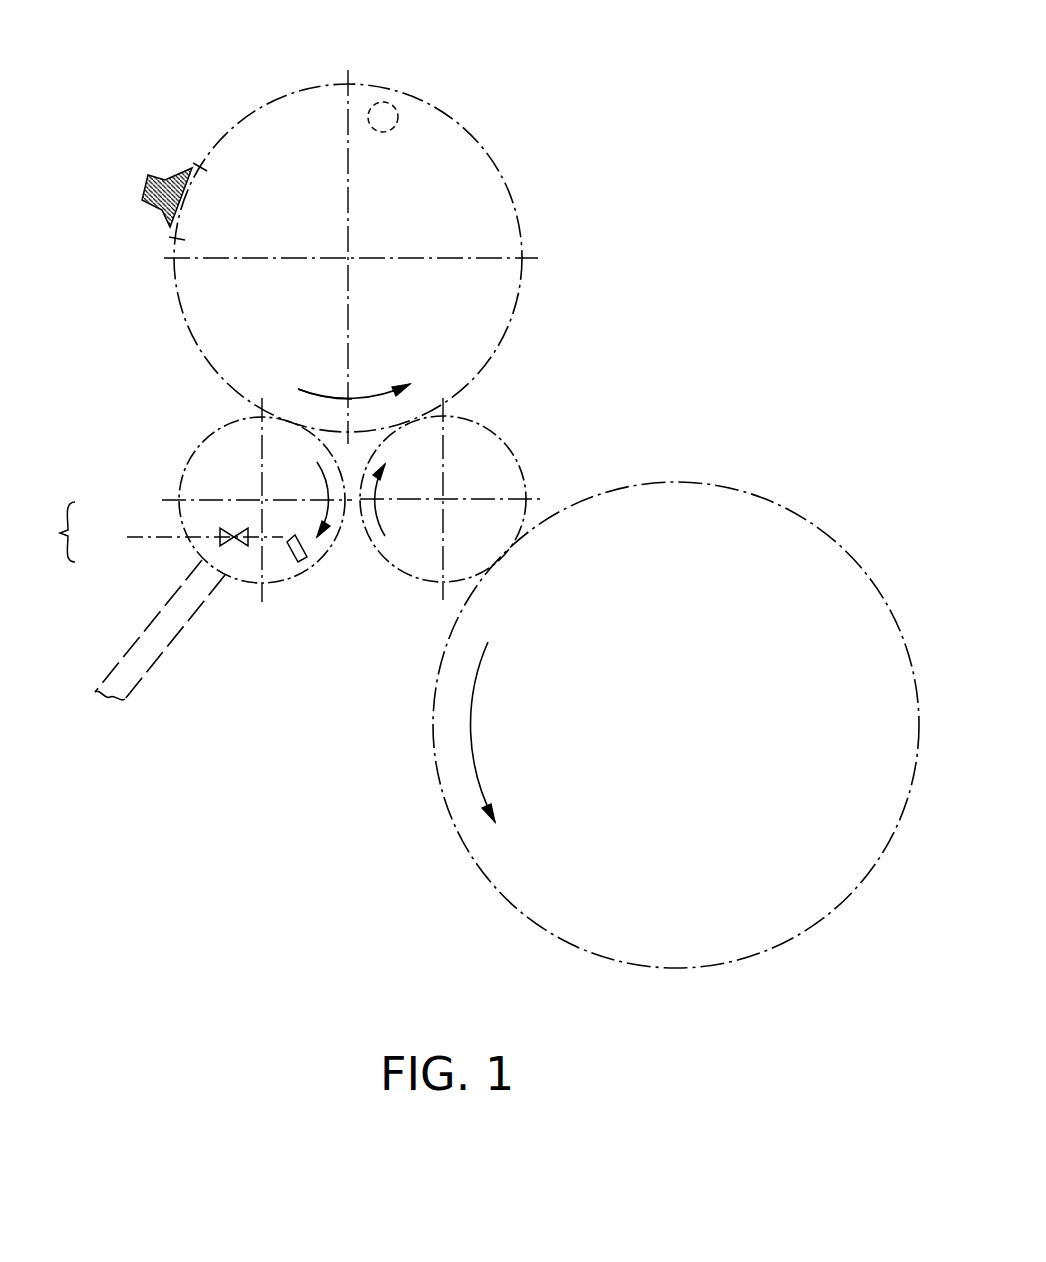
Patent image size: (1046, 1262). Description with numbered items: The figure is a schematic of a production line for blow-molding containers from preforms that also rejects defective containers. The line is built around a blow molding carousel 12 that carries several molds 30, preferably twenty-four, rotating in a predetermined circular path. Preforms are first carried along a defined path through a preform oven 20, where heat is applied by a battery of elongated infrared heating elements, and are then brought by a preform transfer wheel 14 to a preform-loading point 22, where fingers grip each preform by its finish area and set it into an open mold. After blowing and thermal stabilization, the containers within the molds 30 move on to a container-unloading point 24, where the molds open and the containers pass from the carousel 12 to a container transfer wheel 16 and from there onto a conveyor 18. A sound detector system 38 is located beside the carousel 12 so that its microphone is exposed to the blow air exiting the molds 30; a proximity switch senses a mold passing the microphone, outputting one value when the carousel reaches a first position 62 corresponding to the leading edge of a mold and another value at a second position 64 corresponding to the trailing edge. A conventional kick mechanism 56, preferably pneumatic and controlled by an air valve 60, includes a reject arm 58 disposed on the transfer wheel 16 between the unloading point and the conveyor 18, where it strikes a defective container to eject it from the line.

The blow molding carousel 12 is at (478, 191).
The preform transfer wheel 14 is at (492, 462).
The container transfer wheel 16 is at (214, 463).
The conveyor 18 is at (150, 612).
The preform oven 20 is at (806, 567).
The preform-loading point 22 is at (419, 404).
The container-unloading point 24 is at (285, 406).
The mold 30 is at (396, 104).
The sound detector system 38 is at (131, 125).
The kick mechanism 56 is at (47, 532).
The reject arm 58 is at (288, 572).
The air valve 60 is at (228, 532).
The first position 62 is at (200, 167).
The second position 64 is at (177, 240).